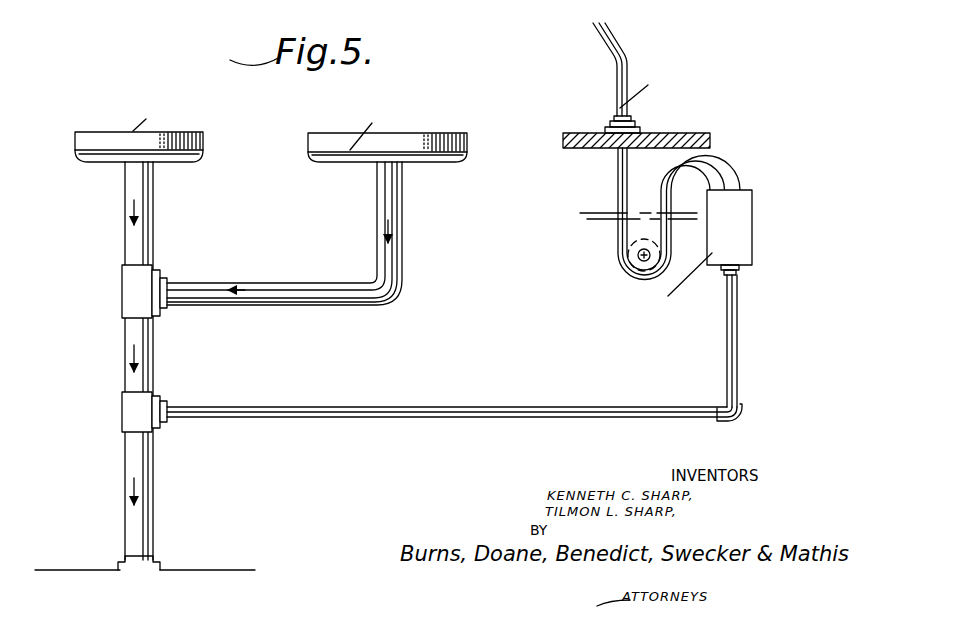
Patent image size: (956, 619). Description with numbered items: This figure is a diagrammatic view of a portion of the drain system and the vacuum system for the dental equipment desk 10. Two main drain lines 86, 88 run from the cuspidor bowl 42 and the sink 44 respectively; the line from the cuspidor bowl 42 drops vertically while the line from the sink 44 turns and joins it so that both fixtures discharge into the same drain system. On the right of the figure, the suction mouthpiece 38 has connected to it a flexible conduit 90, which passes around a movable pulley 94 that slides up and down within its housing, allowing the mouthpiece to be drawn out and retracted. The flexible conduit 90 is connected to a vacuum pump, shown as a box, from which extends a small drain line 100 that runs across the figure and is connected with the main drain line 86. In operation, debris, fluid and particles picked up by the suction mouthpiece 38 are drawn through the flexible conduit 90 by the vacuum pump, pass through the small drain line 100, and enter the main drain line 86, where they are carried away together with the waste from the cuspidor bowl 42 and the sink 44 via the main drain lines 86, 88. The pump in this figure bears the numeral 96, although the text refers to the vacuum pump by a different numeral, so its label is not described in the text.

The desk 10 is at (700, 133).
The suction mouthpiece 38 is at (617, 54).
The cuspidor bowl 42 is at (93, 151).
The sink 44 is at (333, 149).
The main drain line 86 is at (133, 486).
The main drain line 88 is at (325, 300).
The flexible conduit 90 is at (620, 186).
The movable pulley 94 is at (628, 257).
The vacuum pump 96 is at (745, 228).
The small drain line 100 is at (582, 393).